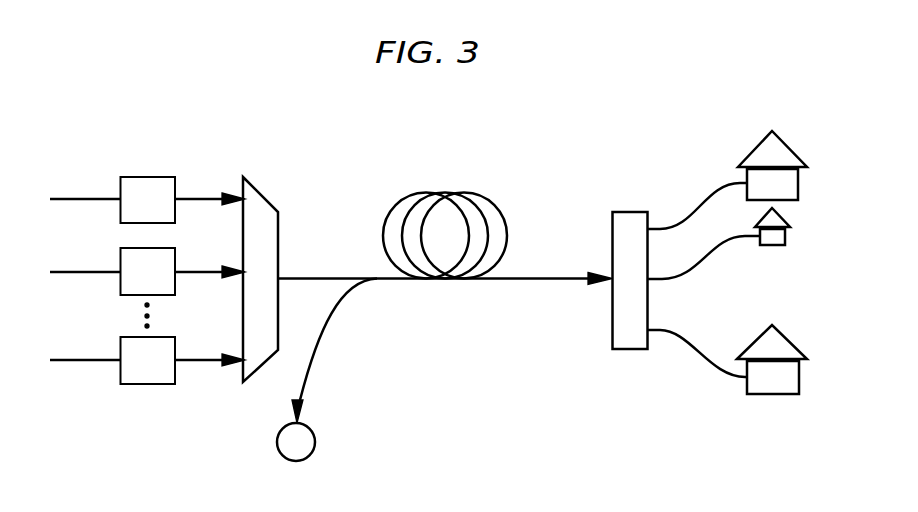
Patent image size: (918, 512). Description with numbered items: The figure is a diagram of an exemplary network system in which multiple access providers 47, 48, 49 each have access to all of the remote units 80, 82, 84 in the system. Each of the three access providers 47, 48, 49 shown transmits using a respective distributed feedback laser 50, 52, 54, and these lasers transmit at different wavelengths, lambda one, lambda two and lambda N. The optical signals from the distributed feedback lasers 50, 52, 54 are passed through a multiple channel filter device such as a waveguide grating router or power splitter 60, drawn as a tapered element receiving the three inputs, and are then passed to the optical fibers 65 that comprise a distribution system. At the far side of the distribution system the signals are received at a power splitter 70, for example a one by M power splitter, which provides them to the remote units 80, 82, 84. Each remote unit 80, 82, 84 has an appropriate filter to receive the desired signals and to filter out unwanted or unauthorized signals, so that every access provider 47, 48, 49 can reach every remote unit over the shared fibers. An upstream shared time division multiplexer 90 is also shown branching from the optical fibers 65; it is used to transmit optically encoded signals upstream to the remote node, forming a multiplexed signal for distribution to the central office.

The access provider 47 is at (62, 199).
The access provider 48 is at (62, 272).
The access provider 49 is at (62, 360).
The distributed feedback laser 50 is at (143, 177).
The distributed feedback laser 52 is at (119, 284).
The distributed feedback laser 54 is at (135, 385).
The waveguide grating router or power splitter 60 is at (263, 197).
The optical fibers 65 is at (488, 197).
The power splitter 70 is at (612, 230).
The remote unit 80 is at (792, 150).
The remote unit 82 is at (786, 238).
The remote unit 84 is at (788, 340).
The upstream shared time division multiplexer 90 is at (316, 440).